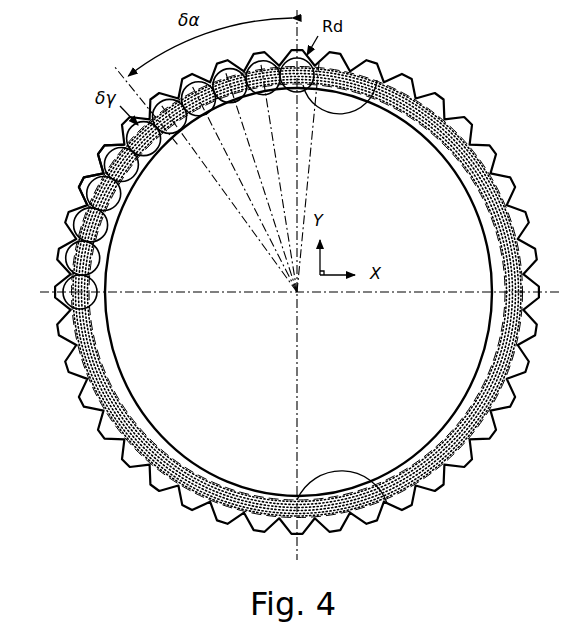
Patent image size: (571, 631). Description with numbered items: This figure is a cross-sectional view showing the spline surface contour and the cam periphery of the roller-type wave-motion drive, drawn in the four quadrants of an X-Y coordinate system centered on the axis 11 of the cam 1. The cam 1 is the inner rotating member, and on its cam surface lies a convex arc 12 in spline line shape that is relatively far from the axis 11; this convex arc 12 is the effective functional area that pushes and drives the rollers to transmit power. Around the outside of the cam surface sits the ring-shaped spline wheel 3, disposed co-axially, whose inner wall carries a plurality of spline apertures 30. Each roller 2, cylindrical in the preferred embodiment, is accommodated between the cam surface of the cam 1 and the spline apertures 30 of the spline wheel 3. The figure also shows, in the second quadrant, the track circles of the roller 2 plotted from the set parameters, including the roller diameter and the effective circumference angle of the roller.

The cam 1 is at (220, 367).
The roller 2 is at (134, 174).
The spline wheel 3 is at (70, 212).
The spline apertures 30 is at (95, 176).
The axis 11 is at (297, 292).
The convex arc 12 is at (372, 85).